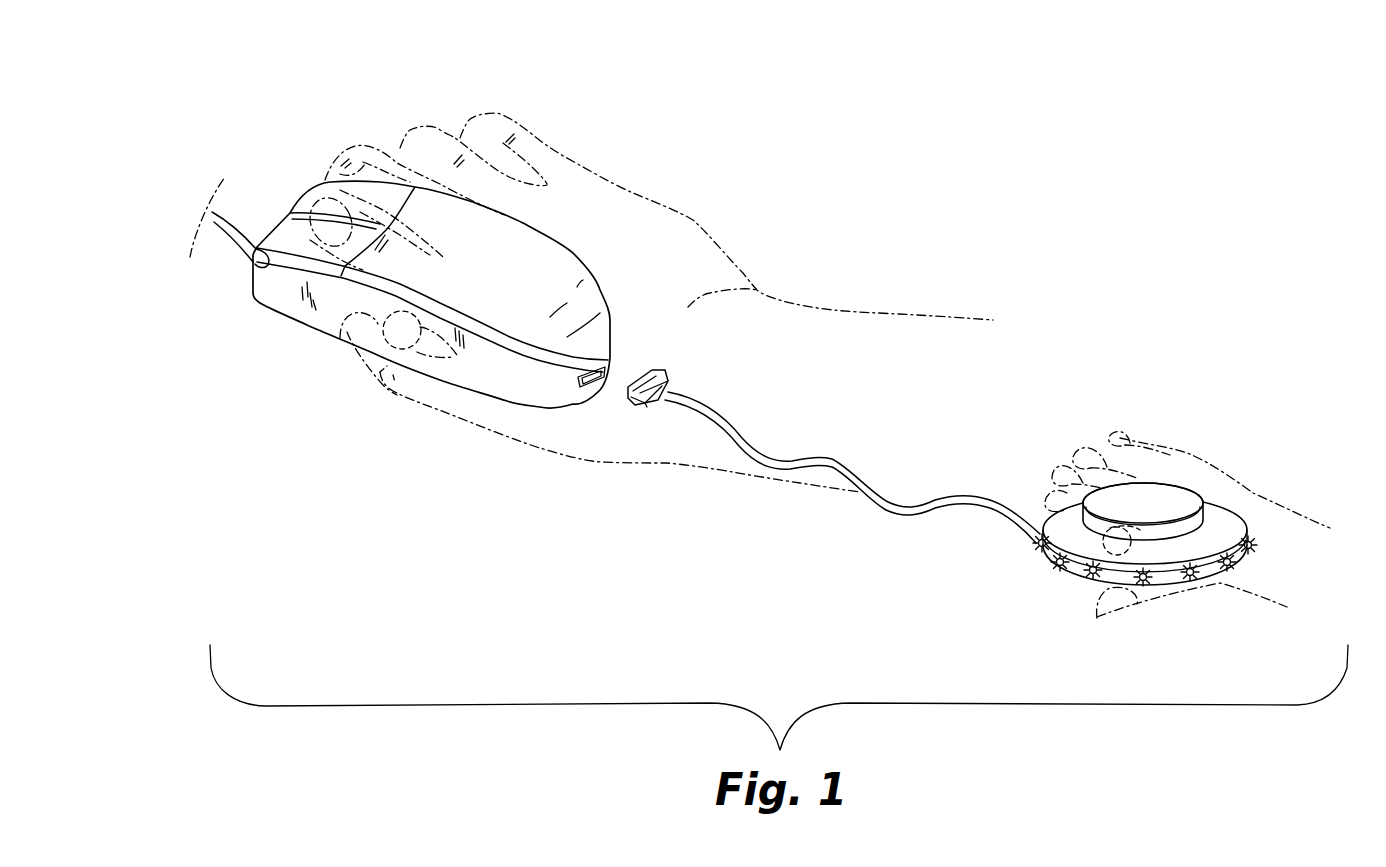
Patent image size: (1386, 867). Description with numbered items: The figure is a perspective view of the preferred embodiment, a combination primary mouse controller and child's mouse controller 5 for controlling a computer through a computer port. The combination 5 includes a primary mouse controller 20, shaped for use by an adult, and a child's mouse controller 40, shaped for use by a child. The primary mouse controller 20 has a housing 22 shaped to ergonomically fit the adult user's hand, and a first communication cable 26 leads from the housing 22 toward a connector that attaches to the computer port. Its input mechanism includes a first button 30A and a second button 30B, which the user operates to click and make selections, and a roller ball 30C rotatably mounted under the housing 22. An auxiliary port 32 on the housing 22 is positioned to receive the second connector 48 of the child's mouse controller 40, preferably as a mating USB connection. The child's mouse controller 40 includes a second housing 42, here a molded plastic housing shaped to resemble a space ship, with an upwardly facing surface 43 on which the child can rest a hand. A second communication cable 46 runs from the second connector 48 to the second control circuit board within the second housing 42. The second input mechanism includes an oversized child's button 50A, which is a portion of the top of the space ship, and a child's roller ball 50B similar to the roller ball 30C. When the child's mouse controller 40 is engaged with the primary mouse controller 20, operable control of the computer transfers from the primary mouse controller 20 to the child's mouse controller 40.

The combination primary mouse controller and child's mouse controller 5 is at (882, 193).
The primary mouse controller 20 is at (343, 407).
The housing 22 is at (312, 309).
The first communication cable 26 is at (239, 233).
The first button 30A is at (256, 266).
The second button 30B is at (323, 188).
The roller ball 30C is at (402, 350).
The auxiliary port 32 is at (613, 372).
The child's mouse controller 40 is at (1168, 536).
The second housing 42 is at (1220, 517).
The upwardly facing surface 43 is at (517, 260).
The second communication cable 46 is at (914, 506).
The second connector 48 is at (668, 381).
The child's button 50A is at (1180, 490).
The child's roller ball 50B is at (1137, 523).